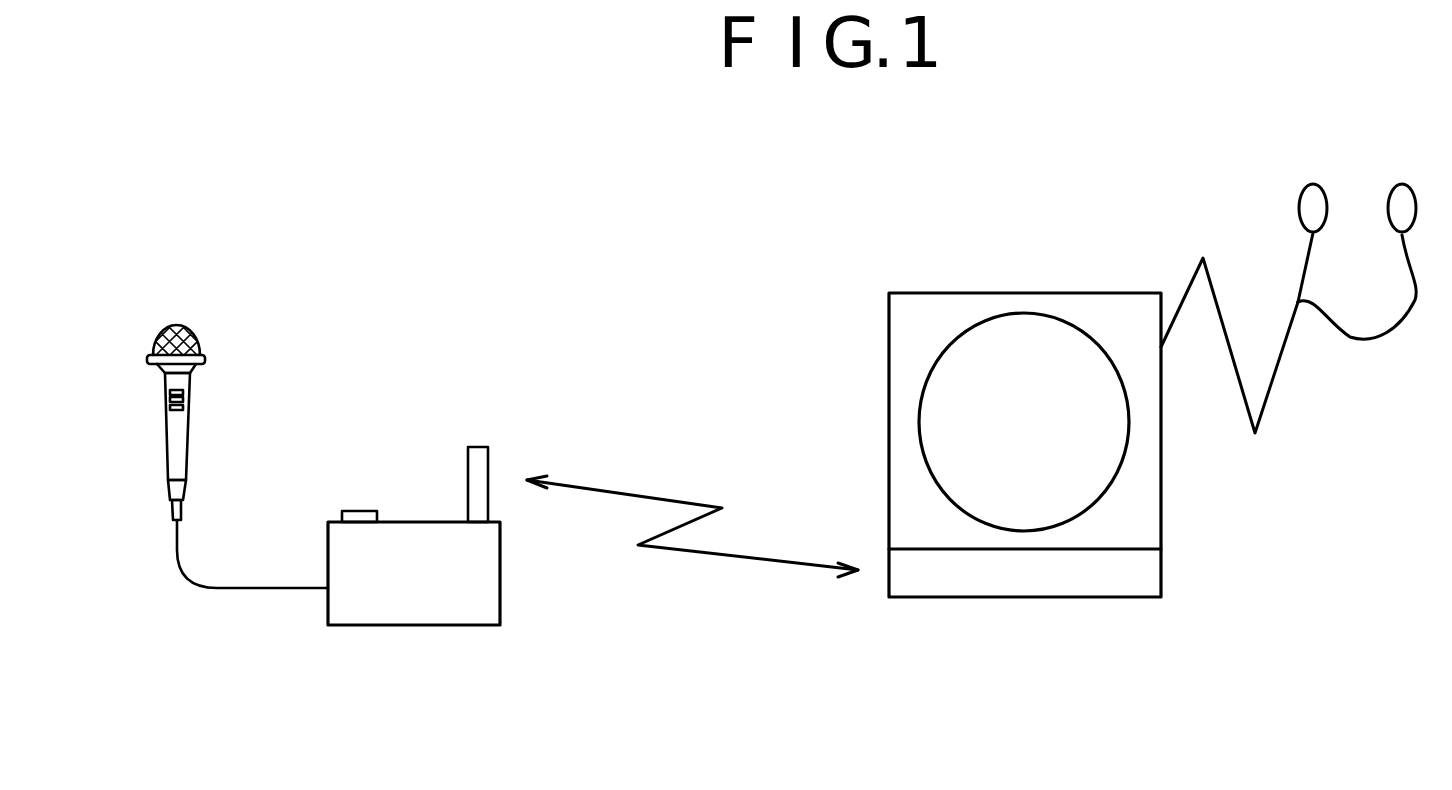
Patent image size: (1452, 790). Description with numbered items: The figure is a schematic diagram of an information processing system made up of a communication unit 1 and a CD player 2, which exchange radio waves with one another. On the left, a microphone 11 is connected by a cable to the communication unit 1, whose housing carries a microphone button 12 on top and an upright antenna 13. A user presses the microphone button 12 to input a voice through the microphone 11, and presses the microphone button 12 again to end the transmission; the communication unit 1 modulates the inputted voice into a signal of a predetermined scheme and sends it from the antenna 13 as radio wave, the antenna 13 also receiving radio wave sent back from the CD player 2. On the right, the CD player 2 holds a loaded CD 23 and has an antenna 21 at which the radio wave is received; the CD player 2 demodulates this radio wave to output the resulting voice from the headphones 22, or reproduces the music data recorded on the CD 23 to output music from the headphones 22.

The communication unit 1 is at (403, 628).
The microphone 11 is at (182, 325).
The microphone button 12 is at (362, 508).
The antenna 13 is at (483, 445).
The CD player 2 is at (1037, 292).
The antenna 21 is at (1015, 582).
The headphones 22 is at (1400, 184).
The CD 23 is at (1123, 459).